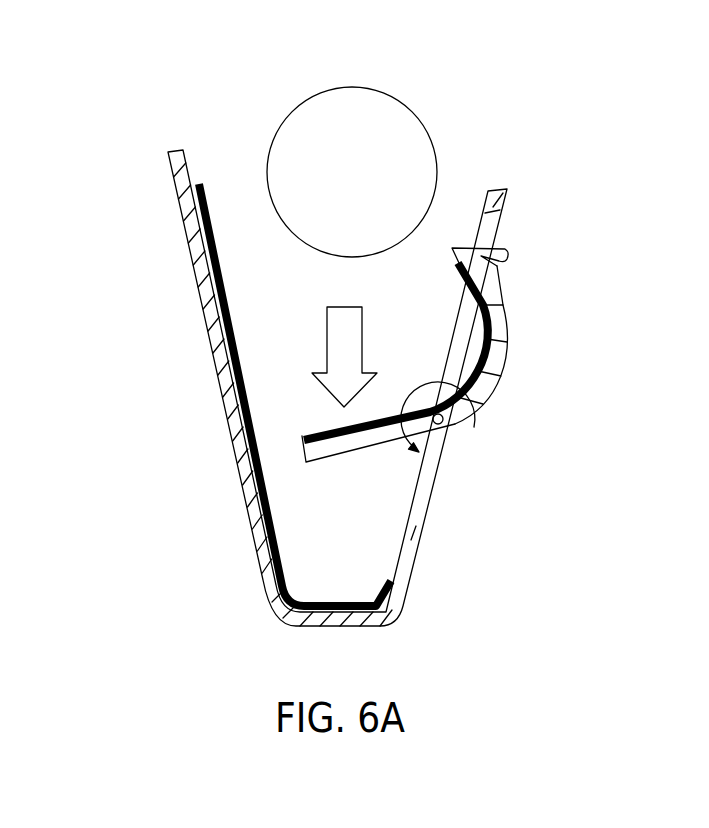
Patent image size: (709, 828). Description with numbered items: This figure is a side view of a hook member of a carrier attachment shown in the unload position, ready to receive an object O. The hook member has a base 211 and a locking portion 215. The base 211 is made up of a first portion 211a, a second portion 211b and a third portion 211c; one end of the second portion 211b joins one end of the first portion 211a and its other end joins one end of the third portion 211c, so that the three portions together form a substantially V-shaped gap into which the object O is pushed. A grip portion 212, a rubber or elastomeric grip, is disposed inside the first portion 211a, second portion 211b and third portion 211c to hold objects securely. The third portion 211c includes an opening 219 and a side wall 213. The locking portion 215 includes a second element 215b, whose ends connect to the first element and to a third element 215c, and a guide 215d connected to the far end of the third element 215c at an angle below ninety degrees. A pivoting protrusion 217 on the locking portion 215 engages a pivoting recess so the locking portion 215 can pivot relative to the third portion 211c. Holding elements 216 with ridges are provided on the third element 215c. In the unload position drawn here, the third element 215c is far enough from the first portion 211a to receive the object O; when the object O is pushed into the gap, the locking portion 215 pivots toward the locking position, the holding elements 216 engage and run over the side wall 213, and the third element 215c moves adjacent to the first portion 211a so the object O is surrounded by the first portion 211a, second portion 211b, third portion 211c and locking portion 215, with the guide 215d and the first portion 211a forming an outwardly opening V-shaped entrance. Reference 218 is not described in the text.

The object O is at (414, 113).
The base 211 is at (140, 130).
The first portion 211a is at (207, 282).
The second portion 211b is at (327, 623).
The third portion 211c is at (507, 191).
The grip portion 212 is at (343, 610).
The side wall 213 is at (465, 304).
The locking portion 215 is at (386, 379).
The second element 215b is at (487, 372).
The third element 215c is at (486, 285).
The guide 215d is at (492, 252).
The holding element 216 is at (493, 310).
The pivoting protrusion 217 is at (443, 422).
The pressing arm 218 is at (302, 438).
The opening 219 is at (420, 530).